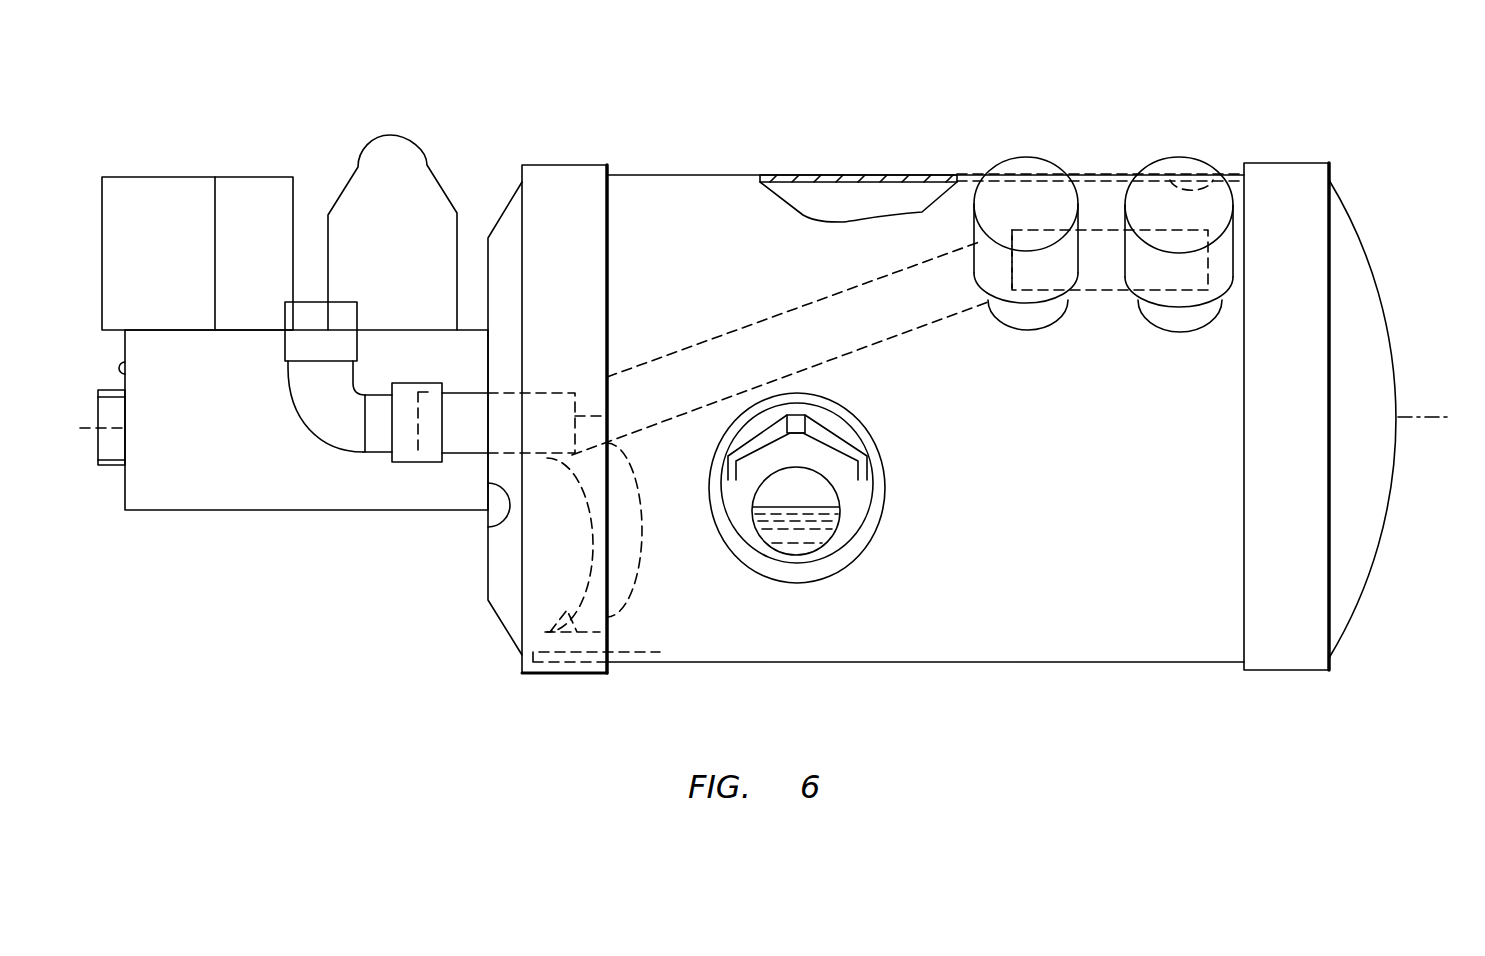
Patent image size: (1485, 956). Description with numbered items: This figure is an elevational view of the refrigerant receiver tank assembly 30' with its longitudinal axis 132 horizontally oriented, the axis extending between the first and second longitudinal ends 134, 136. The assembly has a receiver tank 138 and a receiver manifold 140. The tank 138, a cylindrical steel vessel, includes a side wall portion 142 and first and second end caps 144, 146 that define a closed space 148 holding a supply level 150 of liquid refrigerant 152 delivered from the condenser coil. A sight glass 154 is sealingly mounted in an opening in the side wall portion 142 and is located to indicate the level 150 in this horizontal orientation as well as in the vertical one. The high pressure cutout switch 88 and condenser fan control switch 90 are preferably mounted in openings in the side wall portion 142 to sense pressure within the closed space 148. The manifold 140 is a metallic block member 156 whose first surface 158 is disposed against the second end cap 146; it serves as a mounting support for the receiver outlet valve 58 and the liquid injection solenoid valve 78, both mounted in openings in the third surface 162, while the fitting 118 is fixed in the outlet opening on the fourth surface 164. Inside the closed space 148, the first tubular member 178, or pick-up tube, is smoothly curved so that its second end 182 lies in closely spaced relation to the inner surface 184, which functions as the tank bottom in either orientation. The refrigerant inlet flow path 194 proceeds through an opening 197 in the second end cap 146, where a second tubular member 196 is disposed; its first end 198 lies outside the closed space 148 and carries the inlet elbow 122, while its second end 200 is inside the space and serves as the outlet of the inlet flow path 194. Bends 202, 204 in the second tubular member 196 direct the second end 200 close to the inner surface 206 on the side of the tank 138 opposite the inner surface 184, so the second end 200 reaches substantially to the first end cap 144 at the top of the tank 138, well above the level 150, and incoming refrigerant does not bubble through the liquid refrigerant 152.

The refrigerant receiver tank assembly 30' is at (750, 90).
The receiver outlet valve 58 is at (400, 135).
The liquid injection solenoid valve 78 is at (202, 177).
The high pressure cutout switch 88 is at (1027, 157).
The condenser fan control switch 90 is at (1180, 157).
The fitting 118 is at (115, 443).
The inlet elbow 122 is at (310, 423).
The longitudinal axis 132 is at (1425, 418).
The first longitudinal end 134 is at (1396, 365).
The second longitudinal end 136 is at (488, 570).
The receiver tank 138 is at (947, 662).
The receiver manifold 140 is at (293, 512).
The side wall portion 142 is at (902, 180).
The first end cap 144 is at (1288, 670).
The second end cap 146 is at (553, 675).
The closed space 148 is at (842, 197).
The supply level 150 is at (818, 505).
The liquid refrigerant 152 is at (828, 522).
The sight glass 154 is at (870, 440).
The metallic block member 156 is at (216, 481).
The first surface 158 is at (497, 525).
The third surface 162 is at (257, 326).
The fourth surface 164 is at (127, 369).
The first tubular member 178 is at (632, 593).
The second end of first tubular member 182 is at (562, 608).
The inner surface 184 is at (573, 650).
The refrigerant inlet flow path 194 is at (457, 456).
The second tubular member 196 is at (723, 332).
The opening 197 is at (482, 412).
The first end of second tubular member 198 is at (415, 410).
The second end of second tubular member 200 is at (1208, 280).
The bend 202 is at (607, 416).
The bend 204 is at (1012, 255).
The inner surface 206 is at (1217, 170).